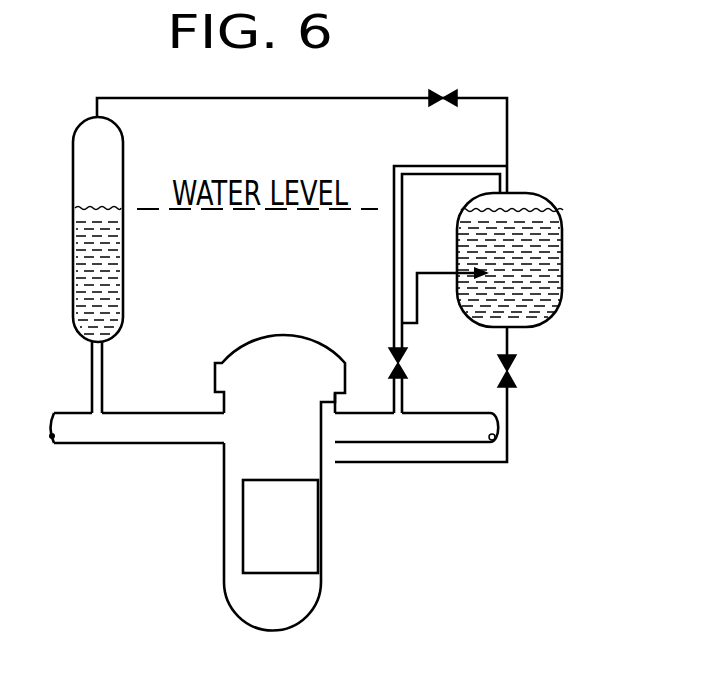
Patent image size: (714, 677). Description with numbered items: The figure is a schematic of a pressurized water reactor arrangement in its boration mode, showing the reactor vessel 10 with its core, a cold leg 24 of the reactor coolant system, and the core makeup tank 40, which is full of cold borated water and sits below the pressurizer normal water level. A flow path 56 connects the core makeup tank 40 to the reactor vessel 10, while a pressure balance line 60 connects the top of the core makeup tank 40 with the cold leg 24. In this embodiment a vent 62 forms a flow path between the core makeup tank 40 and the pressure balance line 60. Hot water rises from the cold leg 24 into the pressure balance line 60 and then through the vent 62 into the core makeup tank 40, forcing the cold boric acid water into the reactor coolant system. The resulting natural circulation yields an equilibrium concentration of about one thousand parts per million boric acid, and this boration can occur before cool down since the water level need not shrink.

The reactor vessel 10 is at (321, 590).
The cold leg 24 is at (470, 443).
The core makeup tank 40 is at (562, 244).
The flow path 56 is at (418, 463).
The pressure balance line 60 is at (393, 268).
The vent 62 is at (420, 308).